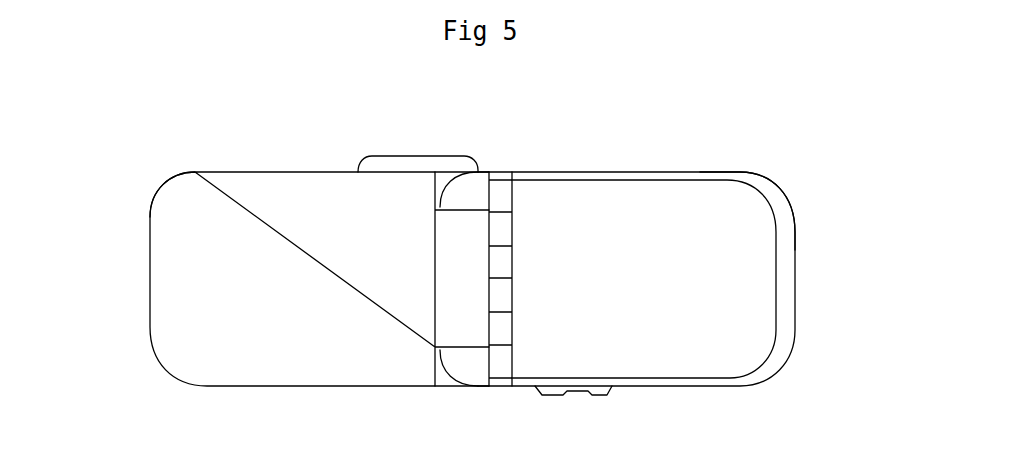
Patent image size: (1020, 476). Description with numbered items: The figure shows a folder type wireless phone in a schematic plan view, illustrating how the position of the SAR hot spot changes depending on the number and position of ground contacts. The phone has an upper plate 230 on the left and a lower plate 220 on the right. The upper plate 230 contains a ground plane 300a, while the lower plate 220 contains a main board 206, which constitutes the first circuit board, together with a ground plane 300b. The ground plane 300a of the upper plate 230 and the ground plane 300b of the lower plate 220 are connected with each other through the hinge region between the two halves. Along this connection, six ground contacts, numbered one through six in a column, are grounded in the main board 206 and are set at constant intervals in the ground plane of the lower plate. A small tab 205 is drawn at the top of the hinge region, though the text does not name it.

The latch tab 205 is at (420, 158).
The main board 206 is at (555, 198).
The lower plate 220 is at (703, 168).
The upper plate 230 is at (163, 193).
The ground plane 300a is at (155, 293).
The ground plane 300b is at (760, 284).